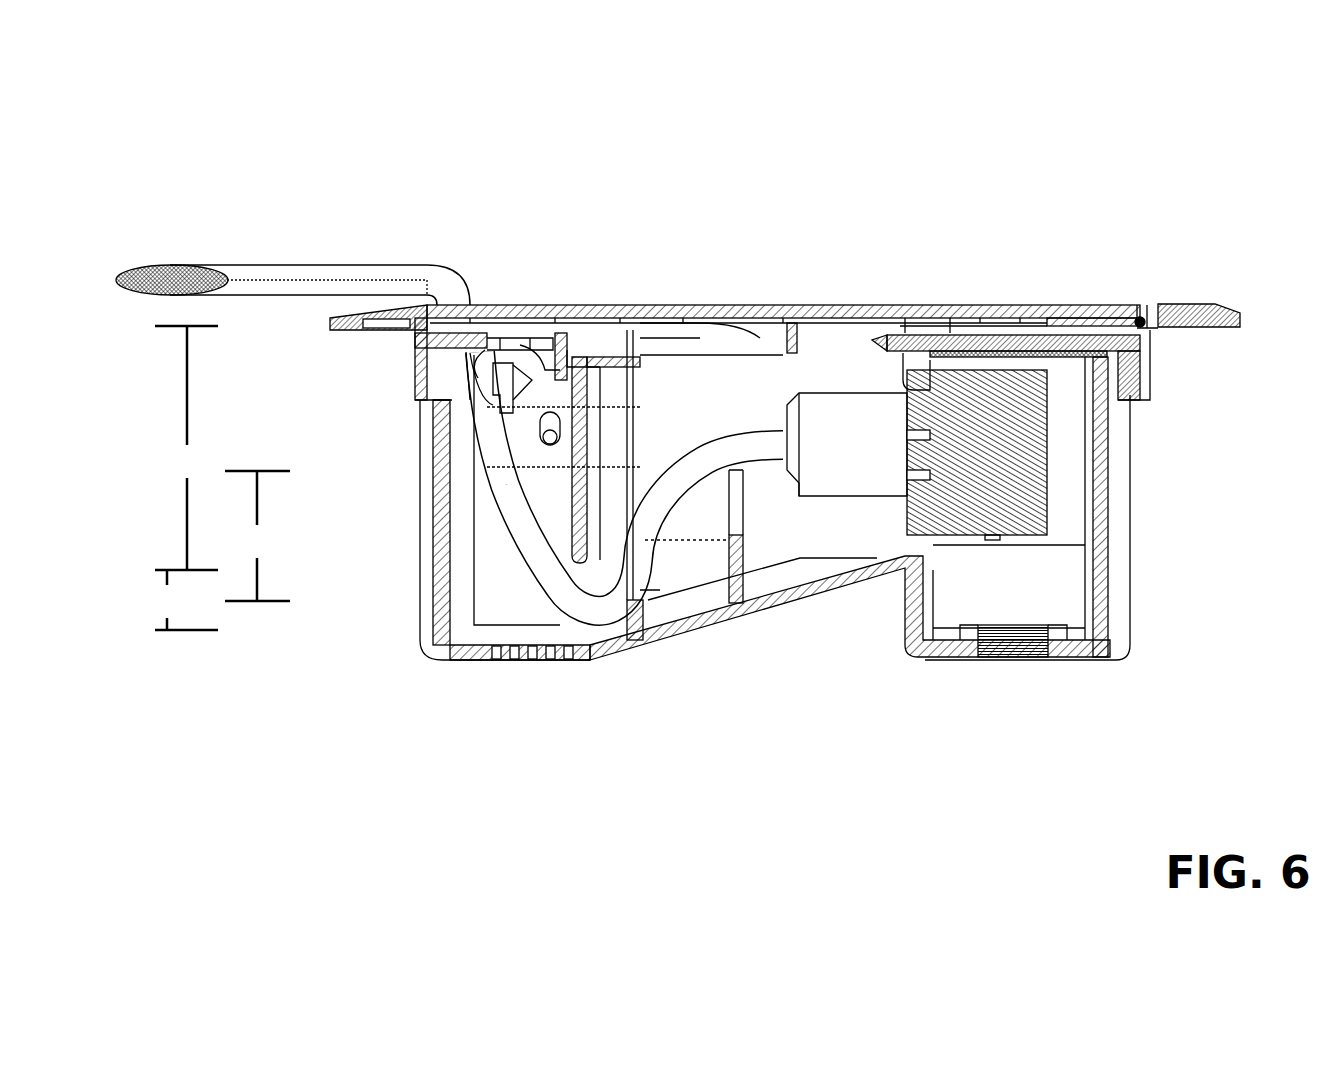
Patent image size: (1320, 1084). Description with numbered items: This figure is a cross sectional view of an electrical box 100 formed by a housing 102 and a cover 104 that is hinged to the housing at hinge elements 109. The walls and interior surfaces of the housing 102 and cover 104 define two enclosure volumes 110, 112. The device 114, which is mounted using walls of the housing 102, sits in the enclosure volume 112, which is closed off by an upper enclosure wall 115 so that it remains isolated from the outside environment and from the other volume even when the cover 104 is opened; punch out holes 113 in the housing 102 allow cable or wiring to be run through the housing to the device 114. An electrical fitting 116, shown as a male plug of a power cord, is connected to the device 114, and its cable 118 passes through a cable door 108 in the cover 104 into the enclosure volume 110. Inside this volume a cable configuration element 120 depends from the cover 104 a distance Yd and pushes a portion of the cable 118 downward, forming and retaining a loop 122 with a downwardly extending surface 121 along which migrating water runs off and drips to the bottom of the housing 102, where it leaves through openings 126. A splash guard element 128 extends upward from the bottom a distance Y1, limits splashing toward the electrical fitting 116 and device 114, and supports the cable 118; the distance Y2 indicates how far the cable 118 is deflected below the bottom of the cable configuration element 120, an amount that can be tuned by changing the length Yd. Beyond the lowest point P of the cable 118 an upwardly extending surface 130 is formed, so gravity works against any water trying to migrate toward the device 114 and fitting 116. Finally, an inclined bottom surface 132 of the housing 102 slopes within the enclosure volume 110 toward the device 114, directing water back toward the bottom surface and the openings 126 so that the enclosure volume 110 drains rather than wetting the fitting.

The electrical box 100 is at (648, 224).
The housing 102 is at (398, 668).
The cover 104 is at (860, 312).
The cable door 108 is at (498, 350).
The hinge elements 109 is at (1142, 318).
The enclosure volume 110 is at (681, 585).
The enclosure volume 112 is at (1072, 472).
The punch out holes 113 is at (1015, 658).
The device 114 is at (1030, 505).
The upper enclosure wall 115 is at (1133, 352).
The electrical fitting 116 is at (817, 412).
The cable 118 is at (277, 270).
The cable configuration element 120 is at (572, 458).
The downwardly extending surface 121 is at (495, 523).
The loop 122 is at (572, 588).
The openings 126 is at (512, 676).
The splash guard element 128 is at (737, 572).
The upwardly extending surface 130 is at (705, 458).
The inclined bottom surface 132 is at (842, 578).
The lowest point P is at (592, 632).
The distance Yd is at (186, 448).
The distance Y1 is at (257, 536).
The distance Y2 is at (186, 600).